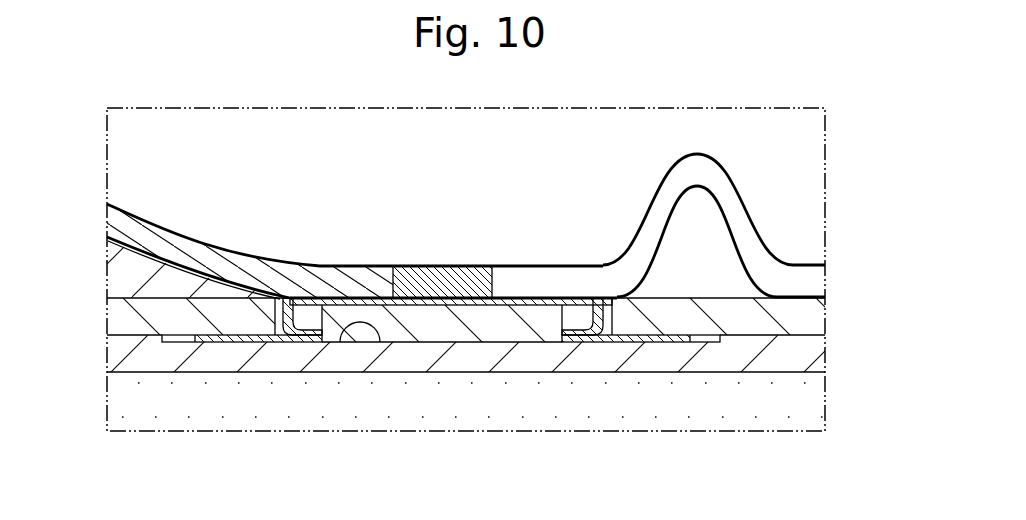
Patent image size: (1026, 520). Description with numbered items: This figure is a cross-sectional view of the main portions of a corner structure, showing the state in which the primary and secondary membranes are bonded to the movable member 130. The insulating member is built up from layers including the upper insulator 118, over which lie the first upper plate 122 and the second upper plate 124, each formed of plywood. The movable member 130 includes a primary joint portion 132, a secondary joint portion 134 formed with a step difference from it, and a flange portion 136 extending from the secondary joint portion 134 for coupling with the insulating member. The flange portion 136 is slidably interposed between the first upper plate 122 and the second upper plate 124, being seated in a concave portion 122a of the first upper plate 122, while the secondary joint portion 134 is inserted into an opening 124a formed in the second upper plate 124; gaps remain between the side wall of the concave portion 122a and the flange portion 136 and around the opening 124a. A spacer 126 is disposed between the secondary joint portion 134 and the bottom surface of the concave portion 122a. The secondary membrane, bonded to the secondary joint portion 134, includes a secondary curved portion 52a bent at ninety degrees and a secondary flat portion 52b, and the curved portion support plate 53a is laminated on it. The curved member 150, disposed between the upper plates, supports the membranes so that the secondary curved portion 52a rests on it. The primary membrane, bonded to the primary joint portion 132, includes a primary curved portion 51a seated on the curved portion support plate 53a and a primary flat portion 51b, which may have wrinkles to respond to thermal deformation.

The primary curved portion 51a is at (160, 226).
The secondary curved portion 52a is at (192, 268).
The curved portion support plate 53a is at (296, 278).
The curved member 150 is at (122, 278).
The second upper plate 124 is at (122, 316).
The opening 124a is at (599, 297).
The first upper plate 122 is at (812, 348).
The concave portion 122a is at (338, 343).
The spacer 126 is at (432, 326).
The movable member 130 is at (451, 264).
The primary joint portion 132 is at (399, 274).
The secondary joint portion 134 is at (512, 302).
The flange portion 136 is at (660, 343).
The upper insulator 118 is at (738, 402).
The primary flat portion 51b is at (812, 266).
The secondary flat portion 52b is at (812, 297).